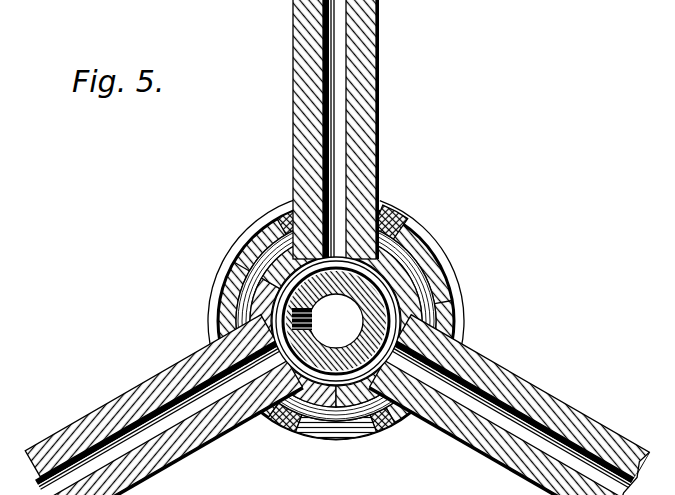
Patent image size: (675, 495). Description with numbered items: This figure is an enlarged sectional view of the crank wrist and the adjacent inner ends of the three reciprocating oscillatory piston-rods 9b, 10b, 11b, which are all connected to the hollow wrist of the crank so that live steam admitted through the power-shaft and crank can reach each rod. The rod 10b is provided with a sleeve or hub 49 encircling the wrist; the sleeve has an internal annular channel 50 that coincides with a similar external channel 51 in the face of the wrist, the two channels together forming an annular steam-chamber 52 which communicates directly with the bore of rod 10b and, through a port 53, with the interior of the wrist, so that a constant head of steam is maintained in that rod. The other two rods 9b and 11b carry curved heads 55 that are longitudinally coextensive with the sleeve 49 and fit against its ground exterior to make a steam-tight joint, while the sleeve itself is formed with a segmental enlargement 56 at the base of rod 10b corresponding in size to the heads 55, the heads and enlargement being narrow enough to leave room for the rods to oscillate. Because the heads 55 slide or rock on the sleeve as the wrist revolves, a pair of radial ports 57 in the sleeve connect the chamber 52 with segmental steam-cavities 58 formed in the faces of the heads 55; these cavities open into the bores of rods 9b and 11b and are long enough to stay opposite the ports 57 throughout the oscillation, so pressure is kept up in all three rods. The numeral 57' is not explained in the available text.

The piston-rod 9b is at (379, 88).
The piston-rod 10b is at (94, 418).
The piston-rod 11b is at (574, 402).
The sleeve or hub 49 is at (397, 280).
The internal annular channel 50 is at (422, 300).
The external channel 51 is at (292, 318).
The annular steam-chamber 52 is at (312, 430).
The port 53 is at (313, 322).
The curved heads 55 is at (400, 226).
The segmental enlargement 56 is at (272, 422).
The radial ports 57 is at (376, 342).
The collar segment 57' is at (408, 206).
The segmental steam-cavities 58 is at (292, 236).